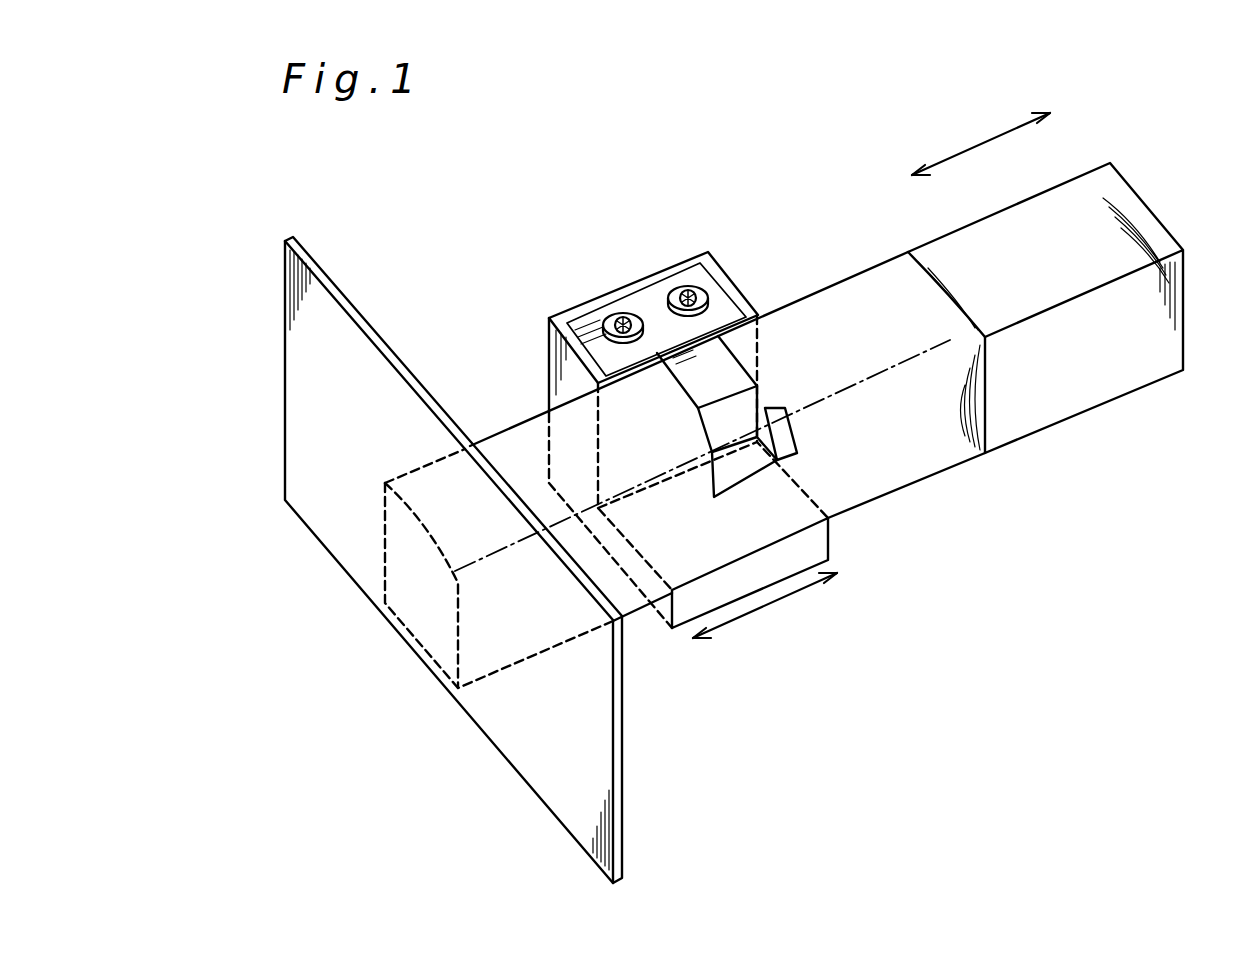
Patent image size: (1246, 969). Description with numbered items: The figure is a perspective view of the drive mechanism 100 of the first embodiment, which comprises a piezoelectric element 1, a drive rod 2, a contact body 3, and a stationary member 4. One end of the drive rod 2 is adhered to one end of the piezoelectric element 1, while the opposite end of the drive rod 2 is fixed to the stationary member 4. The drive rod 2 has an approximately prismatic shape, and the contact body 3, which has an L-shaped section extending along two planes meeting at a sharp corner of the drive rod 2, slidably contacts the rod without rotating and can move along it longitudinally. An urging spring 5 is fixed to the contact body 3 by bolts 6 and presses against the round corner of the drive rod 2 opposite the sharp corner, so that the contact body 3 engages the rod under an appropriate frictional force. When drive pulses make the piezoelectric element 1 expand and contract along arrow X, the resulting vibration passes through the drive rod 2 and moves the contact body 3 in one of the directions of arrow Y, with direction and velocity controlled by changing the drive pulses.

The drive mechanism 100 is at (961, 654).
The piezoelectric element 1 is at (1067, 203).
The drive rod 2 is at (937, 447).
The contact body 3 is at (563, 368).
The stationary member 4 is at (303, 374).
The urging spring 5 is at (732, 440).
The bolts 6 is at (687, 288).